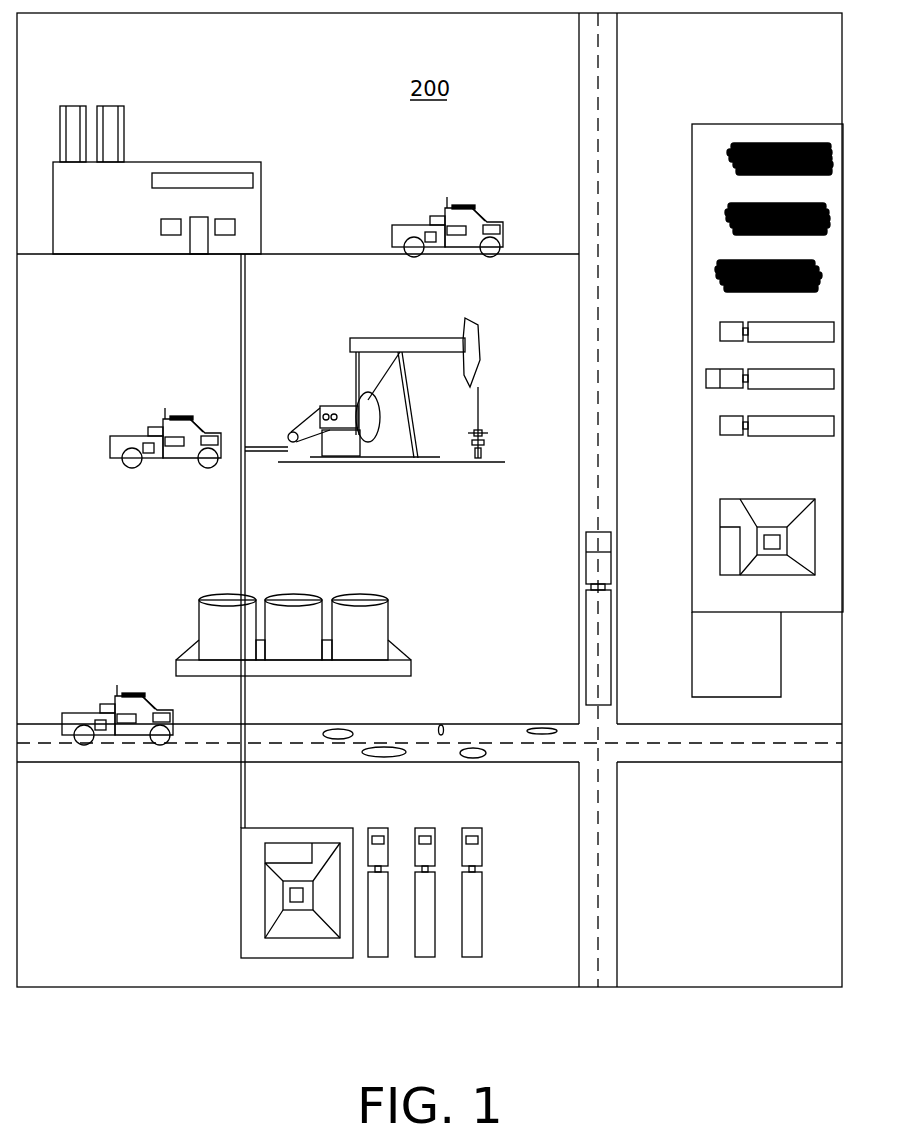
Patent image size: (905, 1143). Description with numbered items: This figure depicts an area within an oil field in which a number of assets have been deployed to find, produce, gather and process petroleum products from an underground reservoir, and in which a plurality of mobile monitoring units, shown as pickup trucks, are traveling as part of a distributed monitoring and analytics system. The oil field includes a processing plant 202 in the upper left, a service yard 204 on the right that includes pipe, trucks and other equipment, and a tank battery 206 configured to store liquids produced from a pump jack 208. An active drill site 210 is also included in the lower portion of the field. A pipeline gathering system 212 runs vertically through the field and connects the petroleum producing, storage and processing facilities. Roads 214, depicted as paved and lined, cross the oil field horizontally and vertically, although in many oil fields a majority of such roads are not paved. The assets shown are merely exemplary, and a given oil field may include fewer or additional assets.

The processing plant 202 is at (166, 162).
The service yard 204 is at (786, 486).
The tank battery 206 is at (331, 597).
The pump jack 208 is at (420, 337).
The active drill site 210 is at (292, 896).
The pipeline gathering system 212 is at (242, 525).
The roads 214 is at (527, 724).